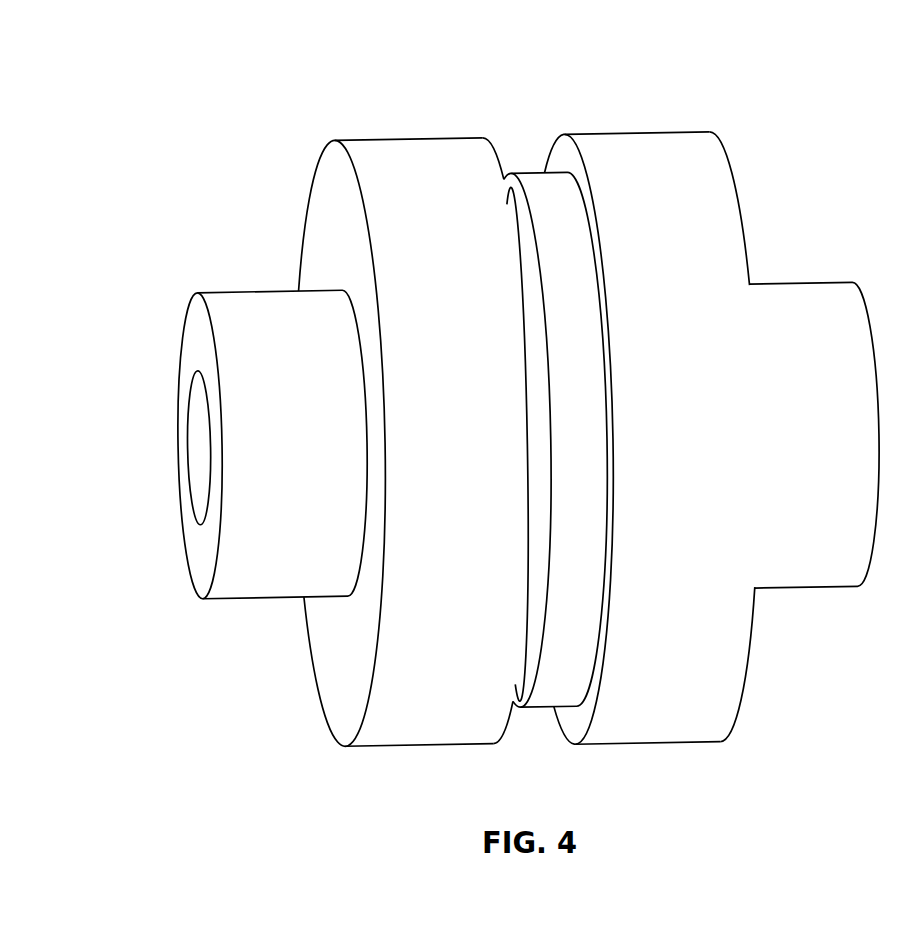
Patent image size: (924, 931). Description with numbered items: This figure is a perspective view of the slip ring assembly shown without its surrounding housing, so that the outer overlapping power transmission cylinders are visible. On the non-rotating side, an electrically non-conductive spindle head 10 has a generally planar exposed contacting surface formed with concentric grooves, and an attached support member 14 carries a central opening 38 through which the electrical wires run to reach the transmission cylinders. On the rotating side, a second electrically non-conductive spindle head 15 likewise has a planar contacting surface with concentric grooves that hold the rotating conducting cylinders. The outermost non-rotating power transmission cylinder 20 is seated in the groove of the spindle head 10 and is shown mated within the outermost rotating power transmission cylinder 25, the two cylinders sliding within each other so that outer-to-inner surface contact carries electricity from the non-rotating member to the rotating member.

The spindle head 10 is at (380, 165).
The support member 14 is at (225, 297).
The central opening 38 is at (200, 422).
The power transmission cylinder 20 is at (541, 440).
The power transmission cylinder 25 is at (546, 188).
The spindle head 15 is at (637, 153).